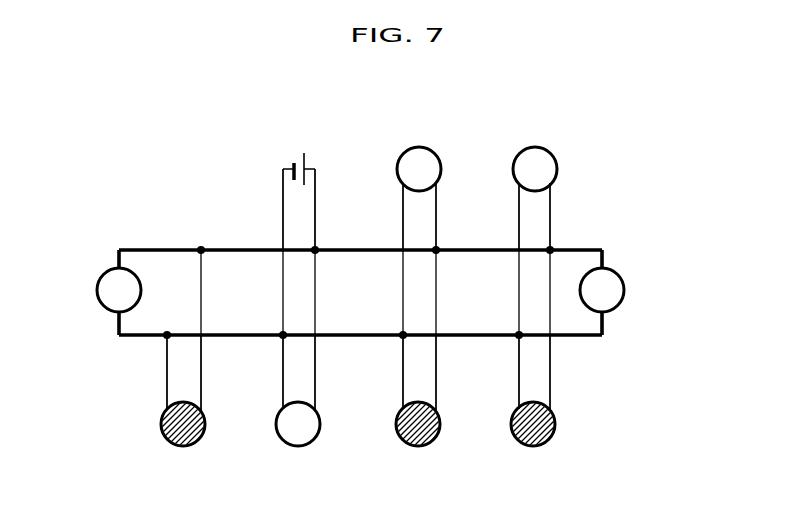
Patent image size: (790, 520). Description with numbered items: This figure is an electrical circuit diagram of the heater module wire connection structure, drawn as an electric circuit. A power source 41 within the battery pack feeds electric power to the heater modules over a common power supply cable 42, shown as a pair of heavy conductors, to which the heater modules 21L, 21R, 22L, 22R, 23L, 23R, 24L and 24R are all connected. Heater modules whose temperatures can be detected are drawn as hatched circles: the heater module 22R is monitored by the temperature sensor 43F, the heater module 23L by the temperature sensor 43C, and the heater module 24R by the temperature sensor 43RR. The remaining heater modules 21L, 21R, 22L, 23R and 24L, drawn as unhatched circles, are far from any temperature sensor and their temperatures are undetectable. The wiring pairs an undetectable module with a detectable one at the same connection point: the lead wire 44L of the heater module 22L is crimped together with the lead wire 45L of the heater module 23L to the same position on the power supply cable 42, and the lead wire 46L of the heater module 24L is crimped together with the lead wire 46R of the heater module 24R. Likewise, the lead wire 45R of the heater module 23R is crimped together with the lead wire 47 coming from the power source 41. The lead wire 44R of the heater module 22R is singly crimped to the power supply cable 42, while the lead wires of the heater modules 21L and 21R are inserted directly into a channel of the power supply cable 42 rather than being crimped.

The power source 41 is at (296, 155).
The power supply cable 42 is at (587, 338).
The lead wire 47 is at (315, 197).
The heater module 21L is at (97, 290).
The heater module 21R is at (624, 290).
The heater module 22L is at (418, 147).
The heater module 22R is at (185, 446).
The heater module 23R is at (298, 446).
The heater module 23L is at (418, 446).
The heater module 24L is at (534, 147).
The heater module 24R is at (533, 446).
The temperature sensor 43F is at (204, 450).
The temperature sensor 43C is at (439, 450).
The temperature sensor 43RR is at (562, 450).
The lead wire 44L is at (436, 197).
The lead wire 44R is at (201, 388).
The lead wire 45L is at (436, 388).
The lead wire 45R is at (315, 388).
The lead wire 46L is at (550, 197).
The lead wire 46R is at (550, 388).